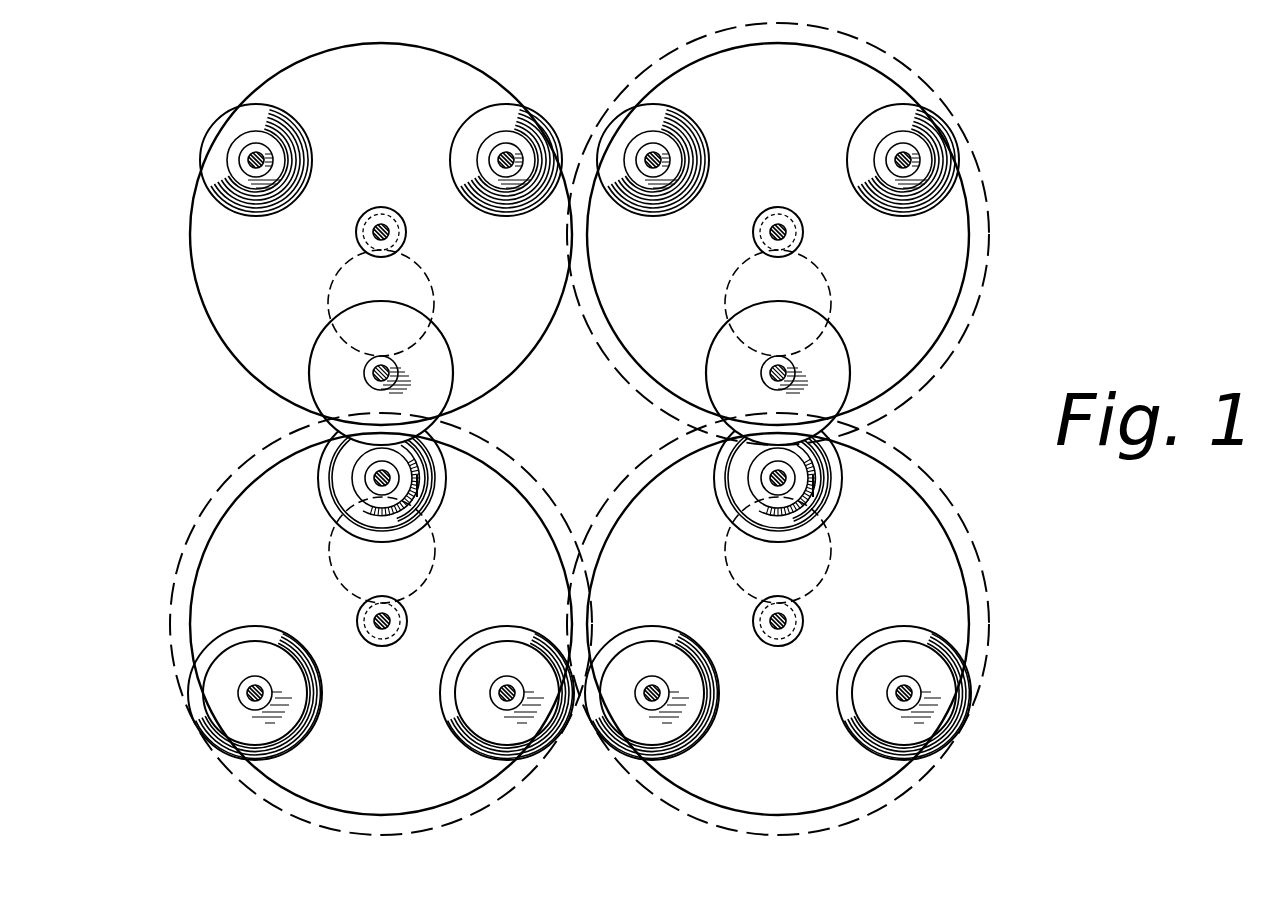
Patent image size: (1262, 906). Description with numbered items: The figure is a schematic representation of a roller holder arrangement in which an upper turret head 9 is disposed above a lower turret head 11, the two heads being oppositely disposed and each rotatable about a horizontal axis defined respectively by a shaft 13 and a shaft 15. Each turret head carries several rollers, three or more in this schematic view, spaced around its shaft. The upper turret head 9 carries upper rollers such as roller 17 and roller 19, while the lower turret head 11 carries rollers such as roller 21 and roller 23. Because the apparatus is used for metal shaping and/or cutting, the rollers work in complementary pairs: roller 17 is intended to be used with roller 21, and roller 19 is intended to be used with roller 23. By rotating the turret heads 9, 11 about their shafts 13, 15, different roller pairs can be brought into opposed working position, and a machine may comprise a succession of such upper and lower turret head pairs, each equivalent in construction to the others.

The upper turret head 9 is at (218, 335).
The lower turret head 11 is at (190, 614).
The shaft 13 is at (392, 233).
The shaft 15 is at (392, 621).
The upper roller 17 is at (330, 350).
The upper roller 19 is at (207, 163).
The roller 21 is at (332, 506).
The roller 23 is at (318, 722).